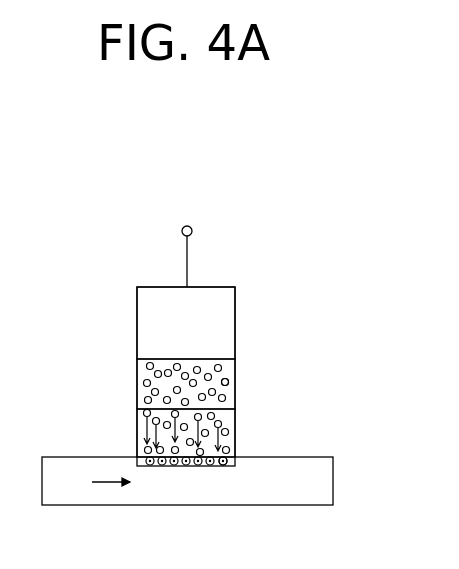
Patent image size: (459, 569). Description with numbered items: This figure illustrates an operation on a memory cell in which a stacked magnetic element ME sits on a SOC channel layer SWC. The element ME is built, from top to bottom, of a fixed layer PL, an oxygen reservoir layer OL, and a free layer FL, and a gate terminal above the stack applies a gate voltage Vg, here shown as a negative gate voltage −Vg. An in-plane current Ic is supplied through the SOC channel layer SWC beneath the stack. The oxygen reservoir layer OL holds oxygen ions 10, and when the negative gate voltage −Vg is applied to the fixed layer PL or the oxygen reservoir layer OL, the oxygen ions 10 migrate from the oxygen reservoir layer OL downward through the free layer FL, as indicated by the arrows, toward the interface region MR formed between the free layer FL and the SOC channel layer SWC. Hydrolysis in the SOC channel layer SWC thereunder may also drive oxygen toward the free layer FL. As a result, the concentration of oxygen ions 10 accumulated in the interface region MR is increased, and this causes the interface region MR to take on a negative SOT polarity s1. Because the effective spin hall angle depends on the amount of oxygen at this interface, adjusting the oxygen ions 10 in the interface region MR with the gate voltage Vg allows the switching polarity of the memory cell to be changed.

The gate voltage Vg is at (186, 243).
The magnetic element ME is at (48, 297).
The fixed layer PL is at (137, 310).
The oxygen reservoir layer OL is at (137, 384).
The free layer FL is at (137, 433).
The oxygen ion 10 is at (236, 381).
The SOC channel layer SWC is at (322, 481).
The in-plane current Ic is at (95, 483).
The interface region MR is at (152, 467).
The negative SOT polarity s1 is at (222, 467).